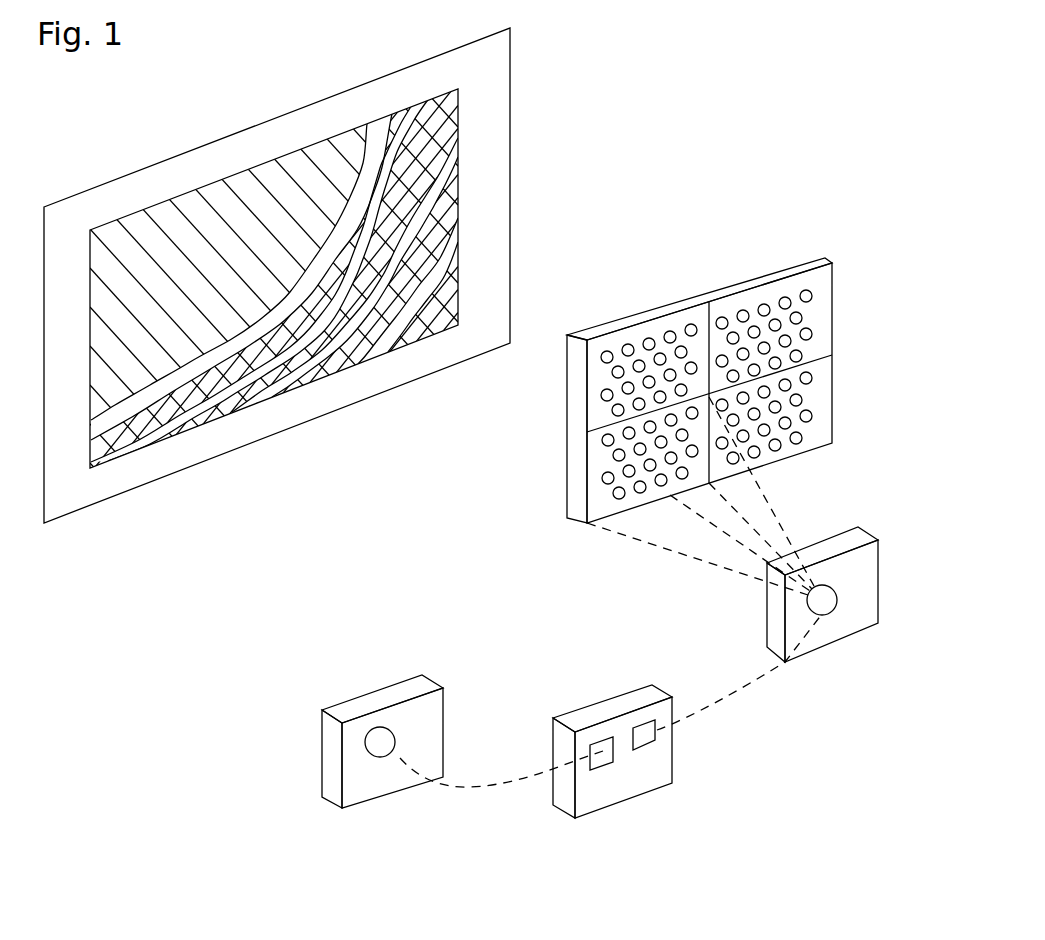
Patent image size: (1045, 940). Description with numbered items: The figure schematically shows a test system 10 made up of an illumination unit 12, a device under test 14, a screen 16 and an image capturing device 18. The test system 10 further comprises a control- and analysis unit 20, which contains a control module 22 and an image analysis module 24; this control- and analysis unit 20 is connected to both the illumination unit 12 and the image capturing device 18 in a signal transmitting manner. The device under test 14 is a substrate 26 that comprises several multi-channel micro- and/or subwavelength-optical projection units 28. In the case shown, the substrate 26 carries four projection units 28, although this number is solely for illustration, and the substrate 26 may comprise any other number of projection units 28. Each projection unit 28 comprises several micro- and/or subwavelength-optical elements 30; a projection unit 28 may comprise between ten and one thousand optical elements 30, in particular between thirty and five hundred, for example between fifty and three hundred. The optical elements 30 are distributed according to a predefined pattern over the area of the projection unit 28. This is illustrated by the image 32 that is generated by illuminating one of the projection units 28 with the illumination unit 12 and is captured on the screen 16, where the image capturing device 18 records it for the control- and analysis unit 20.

The test system 10 is at (655, 147).
The illumination unit 12 is at (862, 615).
The device under test 14 is at (715, 355).
The screen 16 is at (70, 493).
The image capturing device 18 is at (362, 785).
The control- and analysis unit 20 is at (658, 725).
The control module 22 is at (657, 738).
The image analysis module 24 is at (610, 752).
The substrate 26 is at (787, 270).
The projection unit 28 is at (709, 387).
The optical element 30 is at (818, 423).
The image 32 is at (278, 157).